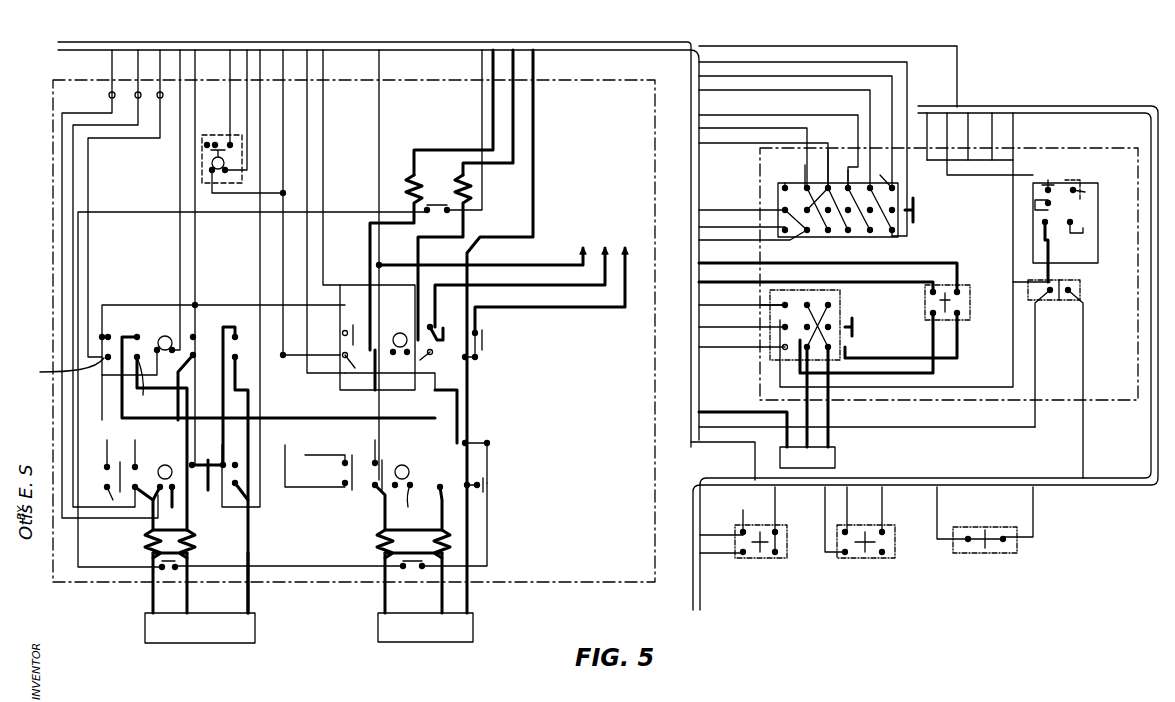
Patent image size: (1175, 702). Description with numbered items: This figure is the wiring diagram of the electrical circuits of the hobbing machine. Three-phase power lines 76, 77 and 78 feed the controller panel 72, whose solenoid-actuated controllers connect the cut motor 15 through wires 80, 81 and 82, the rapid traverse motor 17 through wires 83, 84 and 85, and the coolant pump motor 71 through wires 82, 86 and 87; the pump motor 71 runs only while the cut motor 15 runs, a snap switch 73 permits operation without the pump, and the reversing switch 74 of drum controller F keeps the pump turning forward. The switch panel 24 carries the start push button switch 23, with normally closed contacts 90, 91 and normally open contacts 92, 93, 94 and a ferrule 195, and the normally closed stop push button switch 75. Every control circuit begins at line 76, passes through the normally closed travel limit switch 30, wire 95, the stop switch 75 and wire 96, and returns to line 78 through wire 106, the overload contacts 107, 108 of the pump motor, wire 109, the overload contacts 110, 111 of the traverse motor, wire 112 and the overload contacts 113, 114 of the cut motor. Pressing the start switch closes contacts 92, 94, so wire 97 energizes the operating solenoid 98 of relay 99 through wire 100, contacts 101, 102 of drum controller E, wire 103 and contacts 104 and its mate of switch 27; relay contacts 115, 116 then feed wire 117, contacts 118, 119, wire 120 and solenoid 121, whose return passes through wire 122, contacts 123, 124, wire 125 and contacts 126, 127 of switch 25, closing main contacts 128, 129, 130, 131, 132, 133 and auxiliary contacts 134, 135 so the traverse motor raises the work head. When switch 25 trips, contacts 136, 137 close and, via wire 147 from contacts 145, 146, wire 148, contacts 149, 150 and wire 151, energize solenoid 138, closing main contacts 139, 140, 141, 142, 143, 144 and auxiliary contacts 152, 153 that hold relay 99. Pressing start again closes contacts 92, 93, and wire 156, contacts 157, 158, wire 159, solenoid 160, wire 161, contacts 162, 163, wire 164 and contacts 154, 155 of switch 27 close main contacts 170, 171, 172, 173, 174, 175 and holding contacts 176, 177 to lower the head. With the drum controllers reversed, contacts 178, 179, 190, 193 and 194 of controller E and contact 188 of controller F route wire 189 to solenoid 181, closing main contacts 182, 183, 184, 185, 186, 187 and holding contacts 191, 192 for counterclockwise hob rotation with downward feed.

The cut motor 15 is at (423, 643).
The rapid traverse motor 17 is at (172, 643).
The start push button switch 23 is at (1073, 179).
The switch panel 24 is at (1105, 397).
The switch 25 is at (867, 570).
The switch 27 is at (757, 570).
The travel limit switch 30 is at (991, 553).
The electric motor 71 is at (836, 462).
The controller panel 72 is at (566, 580).
The snap switch 73 is at (966, 312).
The reversing switch 74 is at (855, 325).
The stop push button switch 75 is at (1080, 285).
The power line 76 is at (674, 282).
The power line 77 is at (525, 277).
The power line 78 is at (558, 280).
The wire 80 is at (383, 596).
The wire 81 is at (440, 596).
The wire 82 is at (627, 319).
The wire 83 is at (150, 596).
The wire 84 is at (186, 596).
The wire 85 is at (245, 596).
The wire 86 is at (685, 159).
The wire 87 is at (698, 159).
The normally closed contact 90 is at (1070, 233).
The normally closed contact 91 is at (1044, 175).
The normally open contact 92 is at (1046, 240).
The normally open contact 93 is at (1082, 188).
The normally open contact 94 is at (1040, 202).
The wire 95 is at (1086, 462).
The wire 96 is at (1047, 325).
The wire 97 is at (636, 266).
The operating solenoid 98 is at (210, 166).
The relay 99 is at (212, 187).
The wire 100 is at (586, 279).
The contact 101 is at (742, 226).
The contact 102 is at (753, 239).
The wire 103 is at (831, 312).
The contact 104 is at (746, 525).
The wire 106 is at (973, 66).
The overload contact 107 is at (447, 213).
The overload contact 108 is at (420, 262).
The wire 109 is at (165, 200).
The overload contact 110 is at (150, 572).
The overload contact 111 is at (180, 572).
The wire 112 is at (352, 568).
The overload contact 113 is at (413, 544).
The overload contact 114 is at (415, 558).
The normally open contact 115 is at (207, 142).
The normally open contact 116 is at (232, 142).
The wire 117 is at (230, 70).
The contact 118 is at (914, 208).
The contact 119 is at (895, 230).
The wire 120 is at (471, 266).
The operating solenoid 121 is at (163, 465).
The wire 122 is at (445, 272).
The contact 123 is at (785, 235).
The contact 124 is at (800, 265).
The wire 125 is at (833, 487).
The contact 126 is at (848, 528).
The contact 127 is at (884, 528).
The main contact 128 is at (125, 466).
The main contact 129 is at (134, 508).
The main contact 130 is at (210, 467).
The main contact 131 is at (208, 495).
The main contact 132 is at (233, 468).
The main contact 133 is at (220, 485).
The auxiliary contact 134 is at (119, 451).
The auxiliary contact 135 is at (108, 488).
The contact 136 is at (846, 556).
The contact 137 is at (883, 556).
The operating solenoid 138 is at (400, 333).
The main contact 139 is at (377, 337).
The main contact 140 is at (360, 374).
The main contact 141 is at (432, 326).
The main contact 142 is at (430, 356).
The main contact 143 is at (480, 338).
The main contact 144 is at (478, 354).
The contact 145 is at (782, 326).
The contact 146 is at (782, 351).
The wire 147 is at (533, 192).
The wire 148 is at (582, 199).
The contact 149 is at (847, 174).
The contact 150 is at (848, 235).
The wire 151 is at (901, 321).
The auxiliary contact 152 is at (346, 323).
The auxiliary contact 153 is at (355, 366).
The contact 154 is at (742, 555).
The contact 155 is at (777, 555).
The wire 156 is at (1098, 225).
The contact 157 is at (883, 174).
The contact 158 is at (865, 262).
The wire 159 is at (490, 191).
The operating solenoid 160 is at (165, 336).
The wire 161 is at (489, 188).
The contact 162 is at (807, 235).
The contact 163 is at (828, 235).
The wire 164 is at (1014, 130).
The main contact 170 is at (136, 327).
The main contact 171 is at (161, 443).
The main contact 172 is at (195, 320).
The main contact 173 is at (193, 387).
The main contact 174 is at (240, 337).
The main contact 175 is at (247, 484).
The auxiliary contact 176 is at (108, 333).
The auxiliary contact 177 is at (63, 369).
The contact 178 is at (780, 190).
The contact 179 is at (895, 188).
The operating solenoid 181 is at (436, 500).
The main contact 182 is at (366, 465).
The main contact 183 is at (373, 498).
The main contact 184 is at (401, 465).
The main contact 185 is at (417, 496).
The main contact 186 is at (490, 446).
The main contact 187 is at (486, 485).
The contact 188 is at (762, 297).
The wire 189 is at (246, 100).
The contact 190 is at (828, 186).
The auxiliary contact 191 is at (343, 463).
The auxiliary contact 192 is at (343, 484).
The contact 193 is at (870, 186).
The contact 194 is at (805, 184).
The ferrule 195 is at (777, 530).